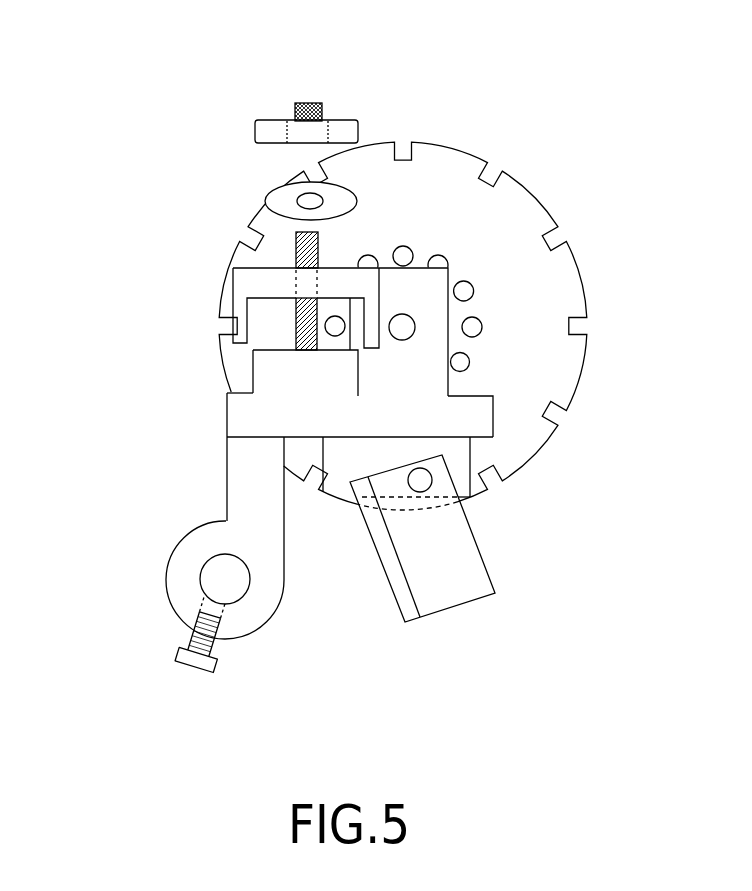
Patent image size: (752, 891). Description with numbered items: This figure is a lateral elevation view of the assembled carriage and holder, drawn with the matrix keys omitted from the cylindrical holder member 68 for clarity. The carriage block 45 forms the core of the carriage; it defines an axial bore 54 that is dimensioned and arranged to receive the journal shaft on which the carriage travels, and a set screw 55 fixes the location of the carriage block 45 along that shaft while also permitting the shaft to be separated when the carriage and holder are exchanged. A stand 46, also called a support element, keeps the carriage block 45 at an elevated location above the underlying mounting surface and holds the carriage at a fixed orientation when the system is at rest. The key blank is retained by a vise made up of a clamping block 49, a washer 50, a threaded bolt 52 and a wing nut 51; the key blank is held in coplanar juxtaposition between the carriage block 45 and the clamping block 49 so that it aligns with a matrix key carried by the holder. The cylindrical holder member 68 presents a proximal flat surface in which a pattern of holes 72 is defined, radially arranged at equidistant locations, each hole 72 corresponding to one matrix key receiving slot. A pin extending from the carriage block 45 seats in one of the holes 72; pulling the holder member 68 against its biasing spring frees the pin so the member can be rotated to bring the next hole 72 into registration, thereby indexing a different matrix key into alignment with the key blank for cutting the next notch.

The carriage block 45 is at (270, 520).
The stand 46 is at (453, 550).
The clamping block 49 is at (245, 282).
The washer 50 is at (267, 195).
The wing nut 51 is at (273, 128).
The threaded bolt 52 is at (296, 254).
The axial bore 54 is at (223, 578).
The set screw 55 is at (205, 670).
The cylindrical holder member 68 is at (537, 363).
The holes 72 is at (437, 255).